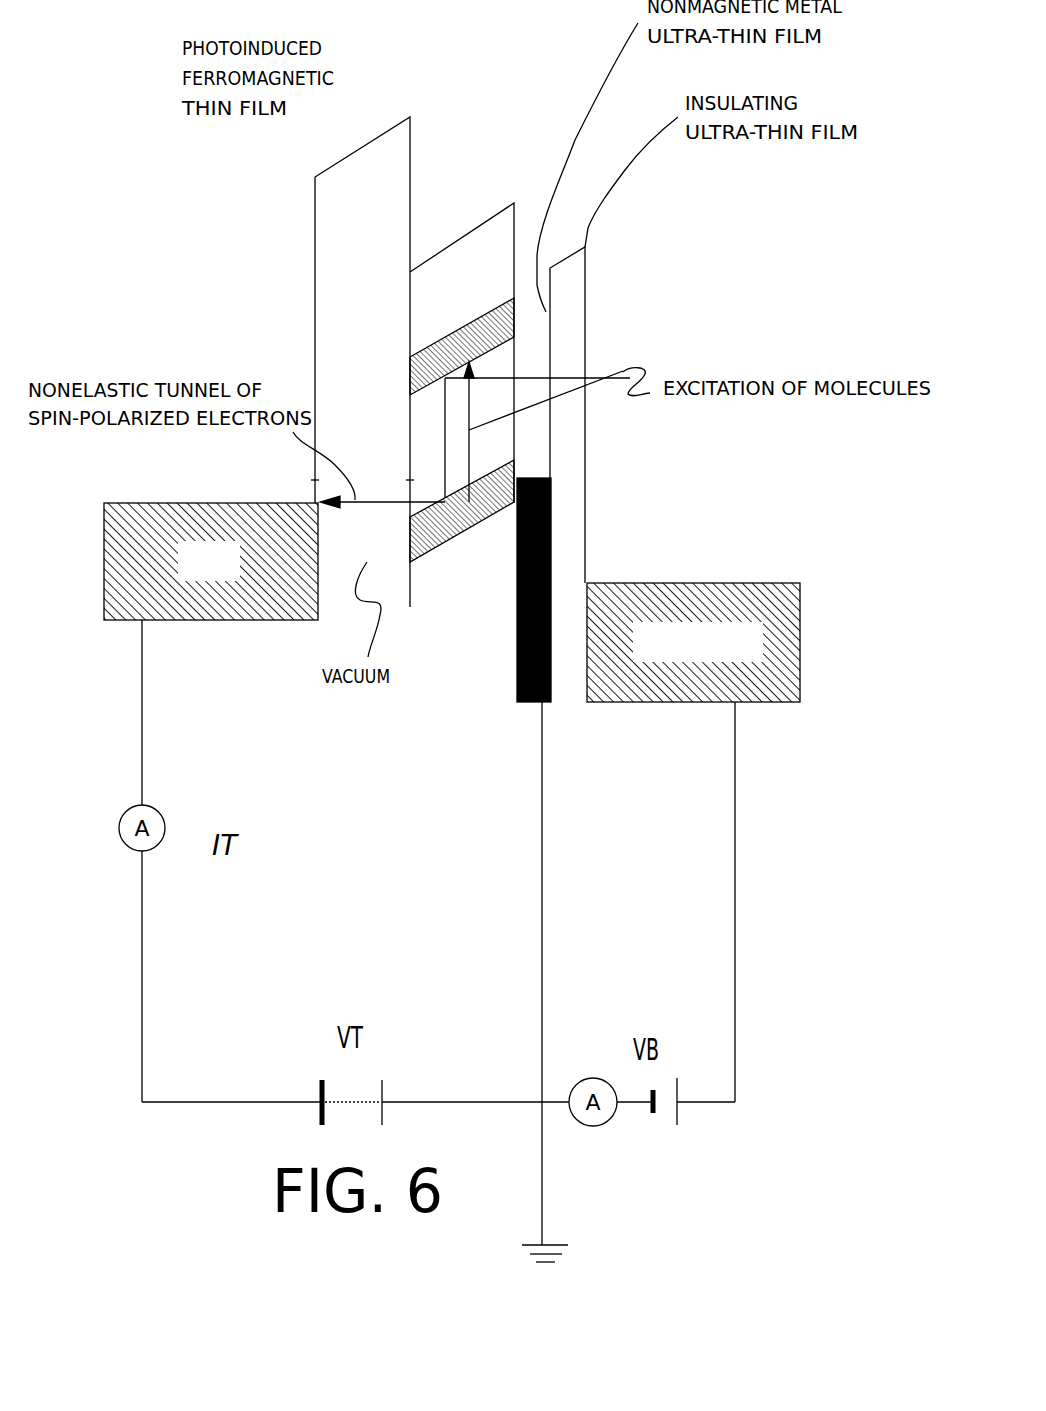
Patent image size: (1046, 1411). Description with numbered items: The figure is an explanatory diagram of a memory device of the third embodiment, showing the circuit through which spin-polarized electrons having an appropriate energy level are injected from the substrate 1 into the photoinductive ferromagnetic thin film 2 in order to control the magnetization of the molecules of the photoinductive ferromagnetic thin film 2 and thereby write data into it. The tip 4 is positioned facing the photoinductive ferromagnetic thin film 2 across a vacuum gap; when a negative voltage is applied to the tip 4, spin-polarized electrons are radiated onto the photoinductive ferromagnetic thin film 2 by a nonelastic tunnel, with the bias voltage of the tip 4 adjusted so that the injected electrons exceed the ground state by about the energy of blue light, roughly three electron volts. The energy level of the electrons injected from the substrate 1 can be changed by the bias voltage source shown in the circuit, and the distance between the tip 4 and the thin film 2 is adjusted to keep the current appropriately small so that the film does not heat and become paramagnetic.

The substrate 1 is at (640, 588).
The photoinductive ferromagnetic thin film 2 is at (362, 327).
The tip 4 is at (185, 600).